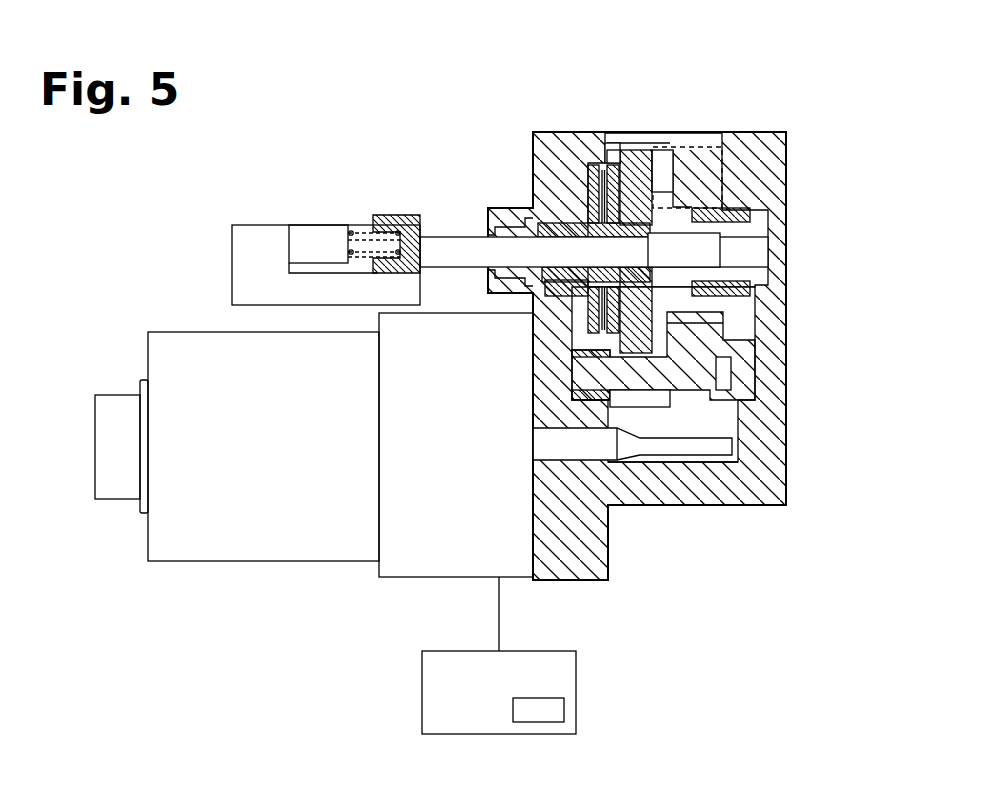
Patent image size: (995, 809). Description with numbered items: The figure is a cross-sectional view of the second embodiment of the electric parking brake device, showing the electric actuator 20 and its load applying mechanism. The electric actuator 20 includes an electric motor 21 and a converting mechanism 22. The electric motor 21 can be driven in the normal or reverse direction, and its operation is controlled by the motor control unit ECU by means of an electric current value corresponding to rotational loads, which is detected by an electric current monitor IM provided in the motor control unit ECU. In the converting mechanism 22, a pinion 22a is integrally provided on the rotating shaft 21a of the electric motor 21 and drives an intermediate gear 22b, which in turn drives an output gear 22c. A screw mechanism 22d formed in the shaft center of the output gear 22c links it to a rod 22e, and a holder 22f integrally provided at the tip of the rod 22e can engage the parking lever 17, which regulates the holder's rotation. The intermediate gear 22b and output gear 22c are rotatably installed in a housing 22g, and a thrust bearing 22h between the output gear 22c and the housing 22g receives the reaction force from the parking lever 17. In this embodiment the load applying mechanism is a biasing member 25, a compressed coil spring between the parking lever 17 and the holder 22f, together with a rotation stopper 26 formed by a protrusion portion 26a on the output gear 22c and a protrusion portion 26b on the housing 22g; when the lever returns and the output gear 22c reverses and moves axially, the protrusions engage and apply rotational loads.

The converting mechanism 22 is at (787, 300).
The pinion 22a is at (694, 462).
The intermediate gear 22b is at (735, 378).
The output gear 22c is at (636, 150).
The screw mechanism 22d is at (728, 247).
The rod 22e is at (452, 237).
The holder 22f is at (258, 225).
The housing 22g is at (778, 470).
The thrust bearing 22h is at (582, 188).
The rotation stopper 26 is at (668, 157).
The protrusion portion 26a is at (615, 147).
The protrusion portion 26b is at (680, 178).
The parking lever 17 is at (327, 225).
The biasing member 25 is at (352, 222).
The electric actuator 20 is at (187, 568).
The electric motor 21 is at (393, 574).
The rotating shaft 21a is at (542, 445).
The motor control unit ECU is at (428, 692).
The electric current monitor IM is at (565, 711).